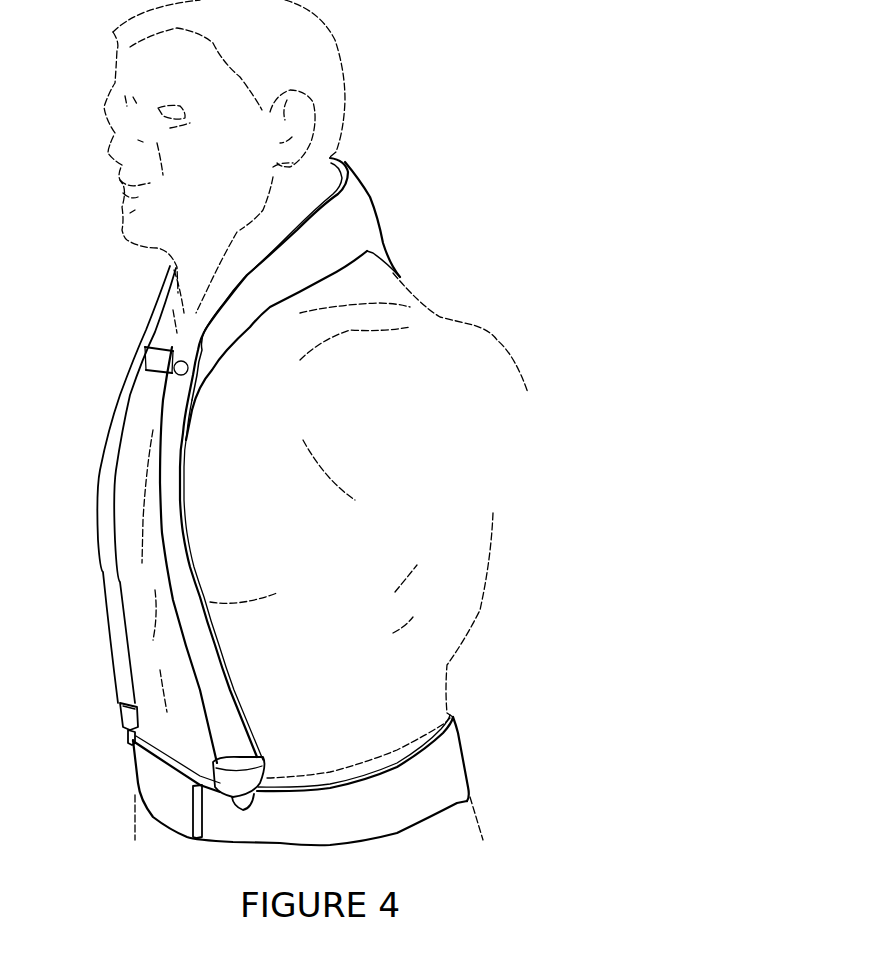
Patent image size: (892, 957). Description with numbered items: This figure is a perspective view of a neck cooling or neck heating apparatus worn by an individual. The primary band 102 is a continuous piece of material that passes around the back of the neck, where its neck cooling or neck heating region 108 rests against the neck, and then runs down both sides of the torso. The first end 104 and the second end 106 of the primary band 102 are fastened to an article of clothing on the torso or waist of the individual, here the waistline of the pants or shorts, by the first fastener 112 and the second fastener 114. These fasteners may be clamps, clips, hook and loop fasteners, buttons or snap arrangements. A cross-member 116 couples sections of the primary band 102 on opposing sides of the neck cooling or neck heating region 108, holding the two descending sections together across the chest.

The primary band 102 is at (170, 407).
The first end 104 is at (182, 787).
The second end 106 is at (121, 715).
The neck cooling or neck heating region 108 is at (373, 208).
The first fastener 112 is at (243, 815).
The second fastener 114 is at (128, 734).
The cross-member 116 is at (145, 360).